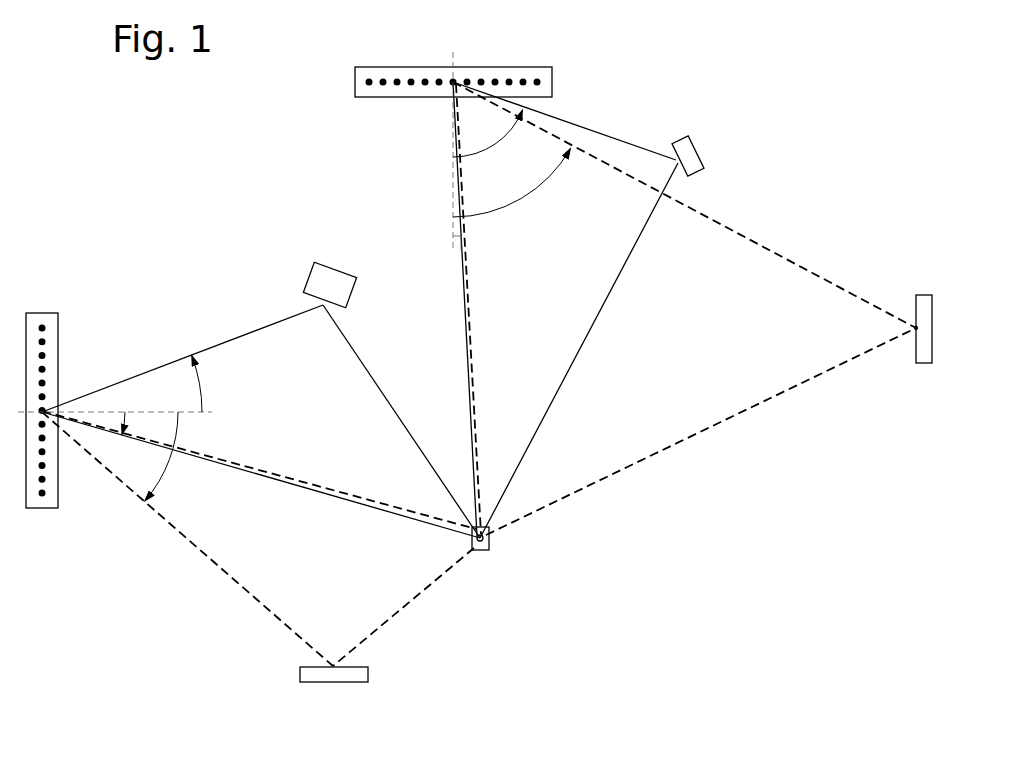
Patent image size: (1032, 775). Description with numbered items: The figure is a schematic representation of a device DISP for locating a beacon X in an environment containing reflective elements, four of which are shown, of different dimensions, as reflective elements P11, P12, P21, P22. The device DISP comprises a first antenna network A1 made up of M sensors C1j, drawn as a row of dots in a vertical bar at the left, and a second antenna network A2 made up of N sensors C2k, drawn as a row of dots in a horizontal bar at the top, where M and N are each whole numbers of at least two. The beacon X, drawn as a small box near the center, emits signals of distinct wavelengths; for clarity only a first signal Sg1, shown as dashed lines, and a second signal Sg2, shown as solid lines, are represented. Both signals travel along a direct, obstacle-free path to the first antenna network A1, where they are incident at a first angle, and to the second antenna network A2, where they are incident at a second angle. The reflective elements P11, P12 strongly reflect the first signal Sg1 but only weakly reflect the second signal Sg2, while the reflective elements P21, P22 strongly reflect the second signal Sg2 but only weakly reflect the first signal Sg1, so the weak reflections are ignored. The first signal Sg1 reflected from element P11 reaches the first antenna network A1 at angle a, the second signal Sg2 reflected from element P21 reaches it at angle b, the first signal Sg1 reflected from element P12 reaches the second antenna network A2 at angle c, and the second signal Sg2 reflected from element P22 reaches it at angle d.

The device DISP is at (119, 141).
The first antenna network A1 is at (72, 402).
The second antenna network A2 is at (478, 63).
The sensors of the first antenna network C1j is at (42, 511).
The sensors of the second antenna network C2k is at (556, 83).
The reflective element P11 is at (334, 685).
The reflective element P12 is at (922, 367).
The reflective element P21 is at (345, 266).
The reflective element P22 is at (711, 152).
The first signal Sg1 is at (327, 486).
The second signal Sg2 is at (259, 327).
The beacon X is at (480, 552).
The angle a is at (164, 456).
The angle b is at (204, 383).
The angle c is at (488, 140).
The angle d is at (512, 182).